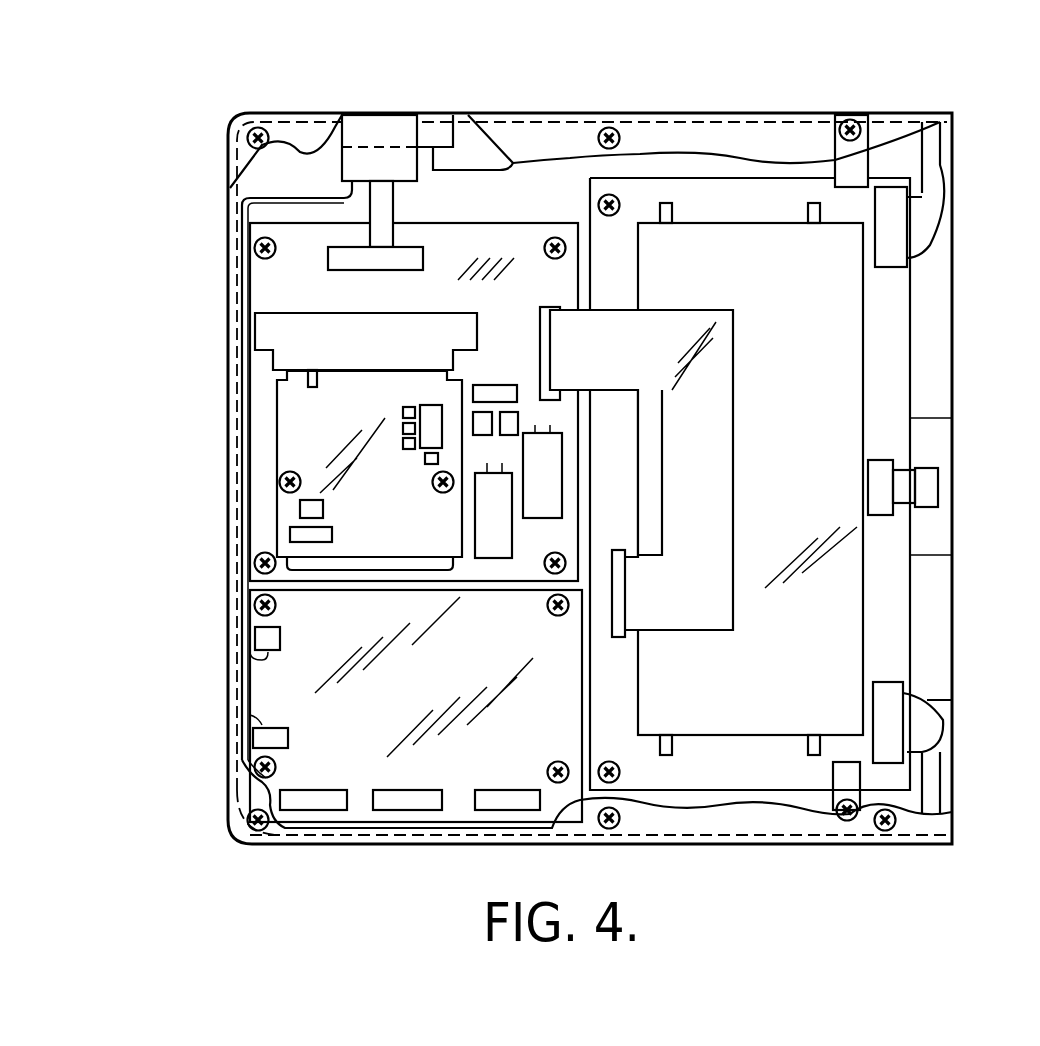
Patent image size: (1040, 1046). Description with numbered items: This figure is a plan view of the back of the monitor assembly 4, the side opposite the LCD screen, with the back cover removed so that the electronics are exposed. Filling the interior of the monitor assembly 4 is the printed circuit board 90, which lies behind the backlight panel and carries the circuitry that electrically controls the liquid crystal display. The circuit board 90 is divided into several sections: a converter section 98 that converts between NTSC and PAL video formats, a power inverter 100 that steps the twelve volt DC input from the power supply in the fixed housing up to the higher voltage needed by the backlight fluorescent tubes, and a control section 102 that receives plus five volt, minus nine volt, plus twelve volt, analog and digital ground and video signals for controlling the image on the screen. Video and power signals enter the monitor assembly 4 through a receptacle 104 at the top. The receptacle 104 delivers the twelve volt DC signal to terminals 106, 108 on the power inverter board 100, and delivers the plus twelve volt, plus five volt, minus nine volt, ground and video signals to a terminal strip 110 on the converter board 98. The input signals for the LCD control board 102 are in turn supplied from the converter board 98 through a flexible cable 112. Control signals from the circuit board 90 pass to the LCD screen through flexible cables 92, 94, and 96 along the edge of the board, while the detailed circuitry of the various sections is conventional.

The monitor assembly 4 is at (168, 555).
The printed circuit board 90 is at (528, 232).
The flexible cable 92 is at (928, 222).
The flexible cable 94 is at (905, 490).
The flexible cable 96 is at (915, 735).
The converter section 98 is at (290, 437).
The power inverter 100 is at (264, 687).
The control section 102 is at (838, 593).
The receptacle 104 is at (378, 128).
The terminal 106 is at (281, 635).
The terminal 108 is at (289, 741).
The terminal strip 110 is at (373, 271).
The flexible cable 112 is at (660, 330).